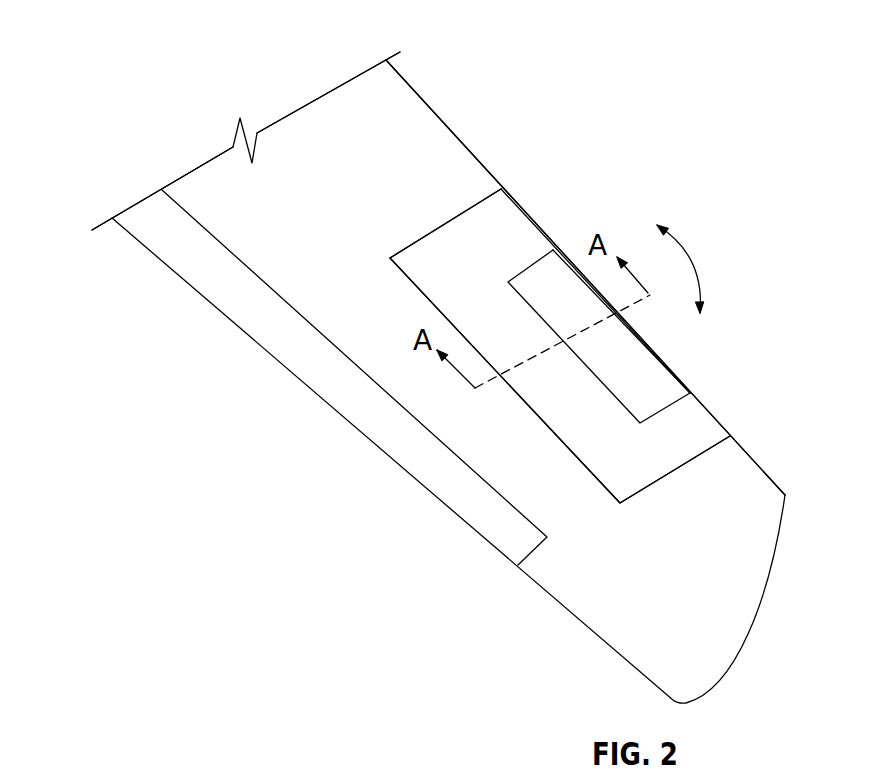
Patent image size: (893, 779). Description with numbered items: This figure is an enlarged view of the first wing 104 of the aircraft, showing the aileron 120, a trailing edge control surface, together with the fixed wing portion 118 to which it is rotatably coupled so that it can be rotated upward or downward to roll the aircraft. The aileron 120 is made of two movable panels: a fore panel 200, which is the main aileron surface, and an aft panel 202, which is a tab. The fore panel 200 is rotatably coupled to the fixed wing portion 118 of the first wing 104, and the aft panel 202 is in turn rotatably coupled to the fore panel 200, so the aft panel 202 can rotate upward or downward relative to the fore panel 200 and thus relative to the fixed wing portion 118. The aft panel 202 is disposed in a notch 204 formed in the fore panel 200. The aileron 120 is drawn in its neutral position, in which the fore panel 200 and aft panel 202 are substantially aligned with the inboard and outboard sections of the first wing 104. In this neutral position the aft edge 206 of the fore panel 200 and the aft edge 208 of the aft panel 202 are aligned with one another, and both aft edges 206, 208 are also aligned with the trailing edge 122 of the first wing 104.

The first wing 104 is at (140, 47).
The fixed wing portion 118 is at (337, 122).
The aileron 120 is at (398, 240).
The trailing edge 122 is at (463, 150).
The fore panel 200 is at (455, 247).
The aft panel 202 is at (648, 380).
The notch 204 is at (532, 312).
The aft edge of the fore panel 206 is at (533, 223).
The aft edge of the aft panel 208 is at (653, 353).